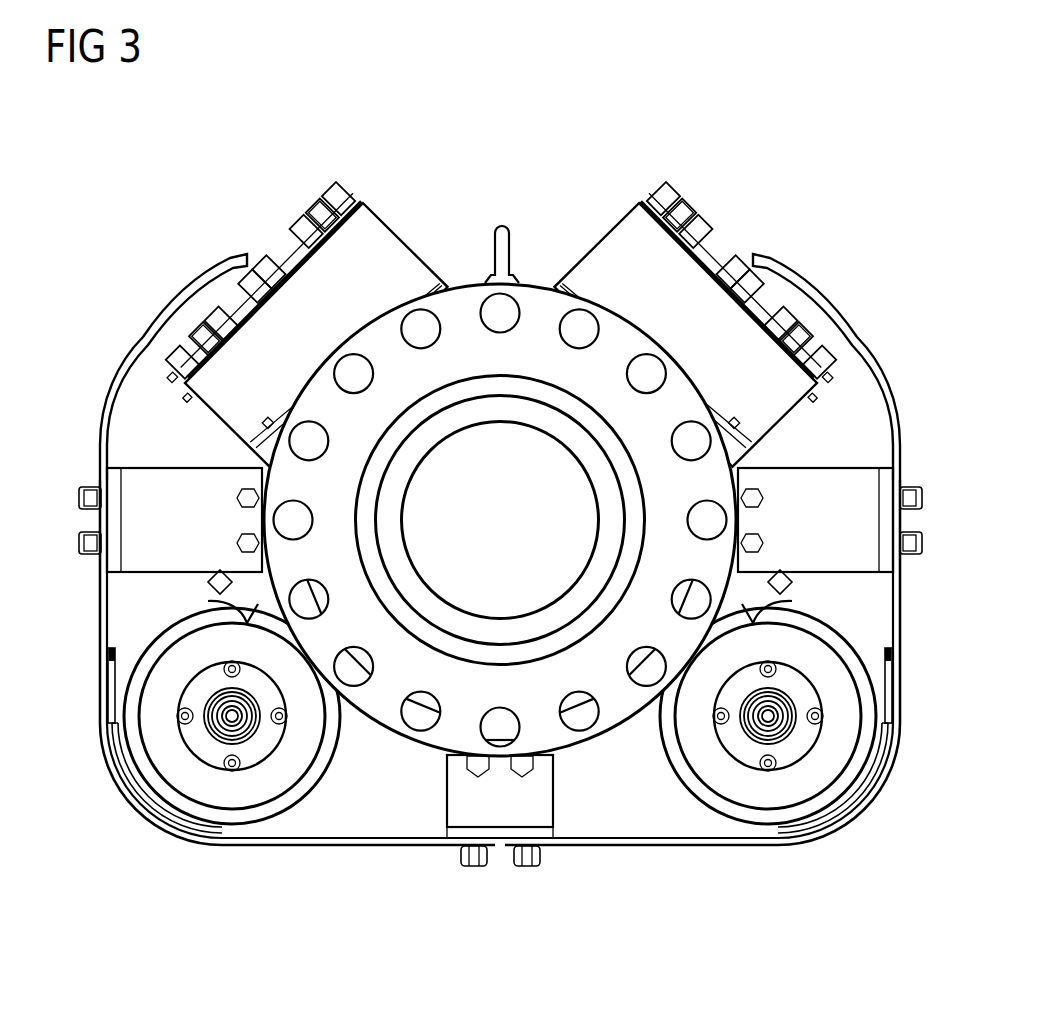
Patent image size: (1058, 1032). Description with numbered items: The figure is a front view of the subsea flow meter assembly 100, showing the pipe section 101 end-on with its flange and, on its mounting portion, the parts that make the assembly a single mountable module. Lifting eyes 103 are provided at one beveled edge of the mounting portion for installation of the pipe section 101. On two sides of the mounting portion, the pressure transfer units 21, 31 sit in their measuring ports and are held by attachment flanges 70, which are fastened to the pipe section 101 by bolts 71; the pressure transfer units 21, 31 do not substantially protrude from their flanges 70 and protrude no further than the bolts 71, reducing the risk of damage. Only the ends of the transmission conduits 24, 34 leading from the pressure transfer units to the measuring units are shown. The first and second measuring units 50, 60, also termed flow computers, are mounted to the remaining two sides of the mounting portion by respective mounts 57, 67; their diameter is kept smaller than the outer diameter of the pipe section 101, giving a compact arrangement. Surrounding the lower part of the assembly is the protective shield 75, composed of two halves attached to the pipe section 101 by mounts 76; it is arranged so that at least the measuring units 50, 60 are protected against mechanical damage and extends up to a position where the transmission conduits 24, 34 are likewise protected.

The subsea flow meter assembly 100 is at (150, 192).
The pipe section 101 is at (462, 305).
The lifting eyes 103 is at (503, 228).
The flanges 70 is at (394, 240).
The bolts 71 is at (501, 276).
The pressure transfer unit 21 is at (290, 258).
The pressure transfer unit 31 is at (714, 258).
The transmission conduits 24 is at (175, 385).
The transmission conduits 34 is at (827, 385).
The mounts 76 is at (180, 478).
The mount 57 is at (236, 602).
The mount 67 is at (764, 602).
The first measuring unit 50 is at (287, 778).
The second measuring unit 60 is at (713, 778).
The protective shield 75 is at (138, 803).